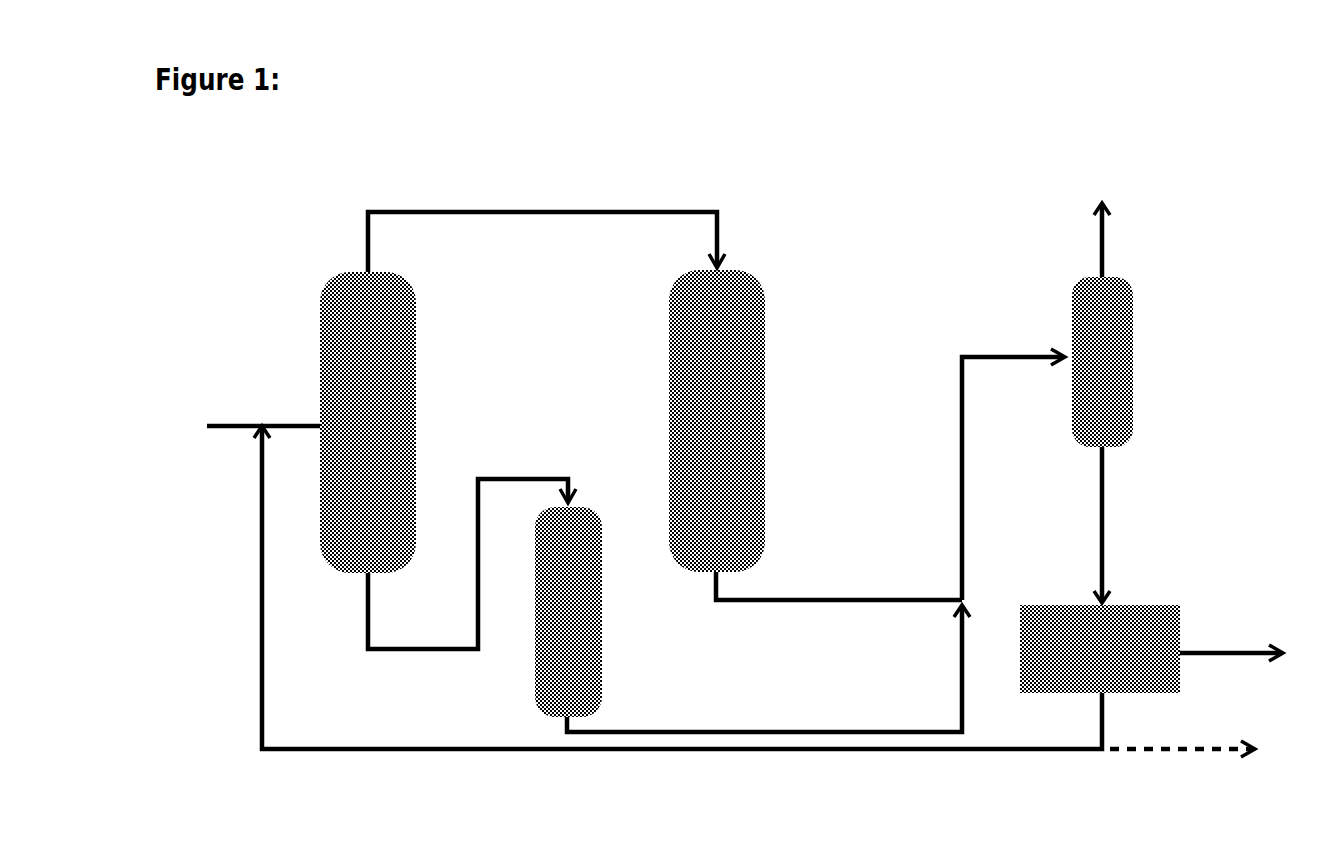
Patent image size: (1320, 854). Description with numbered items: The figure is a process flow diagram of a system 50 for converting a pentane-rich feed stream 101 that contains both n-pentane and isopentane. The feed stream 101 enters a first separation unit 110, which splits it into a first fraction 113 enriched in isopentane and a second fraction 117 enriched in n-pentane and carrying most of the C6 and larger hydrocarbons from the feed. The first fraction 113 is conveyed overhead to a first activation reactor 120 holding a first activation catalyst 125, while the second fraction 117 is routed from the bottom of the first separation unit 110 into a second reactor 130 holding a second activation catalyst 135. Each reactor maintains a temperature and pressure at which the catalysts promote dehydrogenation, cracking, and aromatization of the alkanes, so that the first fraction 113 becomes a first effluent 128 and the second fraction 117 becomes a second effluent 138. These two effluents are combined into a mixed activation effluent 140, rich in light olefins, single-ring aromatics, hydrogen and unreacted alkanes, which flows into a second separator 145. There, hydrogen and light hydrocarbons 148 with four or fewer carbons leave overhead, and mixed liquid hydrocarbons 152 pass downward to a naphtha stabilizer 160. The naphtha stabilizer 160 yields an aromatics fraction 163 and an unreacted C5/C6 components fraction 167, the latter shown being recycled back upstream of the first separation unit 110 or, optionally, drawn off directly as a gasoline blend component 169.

The system 50 is at (233, 197).
The pentane-rich feed stream 101 is at (237, 432).
The first separation unit 110 is at (368, 422).
The first fraction 113 is at (573, 210).
The second fraction 117 is at (447, 652).
The first activation reactor 120 is at (670, 302).
The first activation catalyst 125 is at (717, 421).
The first effluent 128 is at (882, 598).
The second reactor 130 is at (603, 538).
The second activation catalyst 135 is at (568, 612).
The second effluent 138 is at (825, 730).
The mixed activation effluent 140 is at (966, 404).
The second separator 145 is at (1068, 313).
The hydrogen and light hydrocarbons 148 is at (1098, 223).
The mixed liquid hydrocarbons 152 is at (1105, 530).
The naphtha stabilizer 160 is at (1145, 605).
The aromatics fraction 163 is at (1198, 650).
The unreacted C5/C6 components fraction 167 is at (905, 752).
The gasoline blend component 169 is at (1212, 761).